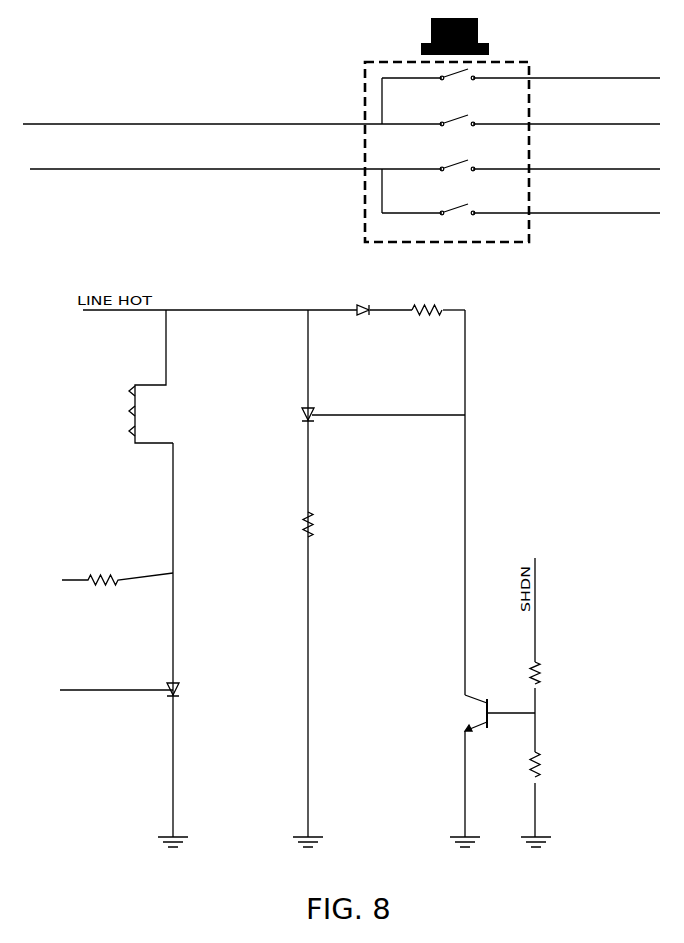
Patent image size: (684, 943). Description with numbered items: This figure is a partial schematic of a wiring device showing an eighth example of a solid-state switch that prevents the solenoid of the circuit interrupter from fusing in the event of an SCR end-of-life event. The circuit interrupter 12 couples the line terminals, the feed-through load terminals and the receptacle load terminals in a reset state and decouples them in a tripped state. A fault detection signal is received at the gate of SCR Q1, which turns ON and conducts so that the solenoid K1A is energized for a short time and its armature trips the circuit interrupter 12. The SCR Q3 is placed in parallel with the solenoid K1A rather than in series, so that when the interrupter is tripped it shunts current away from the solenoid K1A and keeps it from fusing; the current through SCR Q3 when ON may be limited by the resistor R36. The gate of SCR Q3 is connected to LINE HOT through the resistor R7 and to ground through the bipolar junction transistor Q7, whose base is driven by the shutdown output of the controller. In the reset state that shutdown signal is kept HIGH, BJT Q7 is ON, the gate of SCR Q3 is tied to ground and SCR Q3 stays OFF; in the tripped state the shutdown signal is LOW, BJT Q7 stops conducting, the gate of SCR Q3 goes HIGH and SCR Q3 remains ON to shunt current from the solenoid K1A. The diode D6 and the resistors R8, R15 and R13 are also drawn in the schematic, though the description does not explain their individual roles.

The circuit interrupter 12 is at (382, 62).
The solenoid K1A is at (136, 376).
The SCR Q3 is at (369, 415).
The resistor R36 is at (290, 524).
The diode D6 is at (361, 300).
The resistor R7 is at (427, 301).
The resistor R8 is at (117, 571).
The SCR Q1 is at (131, 690).
The bipolar junction transistor Q7 is at (479, 713).
The resistor R15 is at (518, 673).
The resistor R13 is at (517, 764).